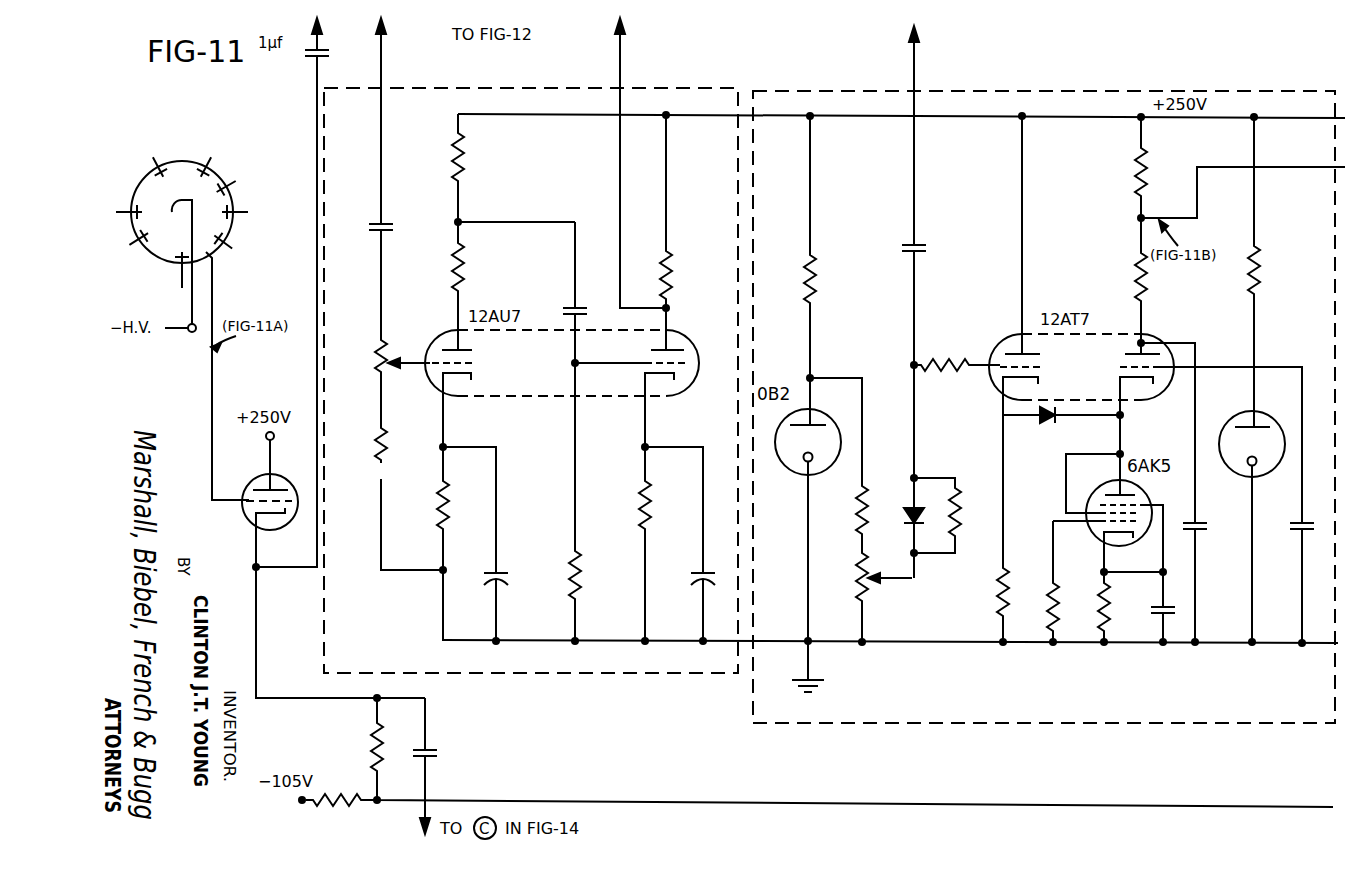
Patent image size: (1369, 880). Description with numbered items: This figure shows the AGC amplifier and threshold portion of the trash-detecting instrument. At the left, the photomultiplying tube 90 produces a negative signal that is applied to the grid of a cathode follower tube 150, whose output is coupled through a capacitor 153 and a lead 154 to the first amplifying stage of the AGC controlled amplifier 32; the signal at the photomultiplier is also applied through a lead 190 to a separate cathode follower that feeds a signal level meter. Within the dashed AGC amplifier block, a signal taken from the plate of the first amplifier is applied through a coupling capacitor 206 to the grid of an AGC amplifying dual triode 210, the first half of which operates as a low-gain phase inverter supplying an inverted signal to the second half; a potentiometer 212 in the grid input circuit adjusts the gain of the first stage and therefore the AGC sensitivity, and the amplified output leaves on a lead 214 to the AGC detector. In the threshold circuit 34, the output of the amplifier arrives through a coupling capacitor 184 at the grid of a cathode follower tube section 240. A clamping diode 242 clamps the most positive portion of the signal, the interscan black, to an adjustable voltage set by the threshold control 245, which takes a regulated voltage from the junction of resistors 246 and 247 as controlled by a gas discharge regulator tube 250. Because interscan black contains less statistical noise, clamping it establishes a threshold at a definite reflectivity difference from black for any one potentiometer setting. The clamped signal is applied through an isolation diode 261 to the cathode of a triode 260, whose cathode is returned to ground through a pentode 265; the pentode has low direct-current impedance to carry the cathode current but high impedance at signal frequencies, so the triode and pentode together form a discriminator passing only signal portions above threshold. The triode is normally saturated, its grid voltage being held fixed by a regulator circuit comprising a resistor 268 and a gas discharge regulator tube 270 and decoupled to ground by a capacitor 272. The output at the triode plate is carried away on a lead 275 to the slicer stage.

The photomultiplying tube 90 is at (180, 160).
The cathode follower tube 150 is at (260, 485).
The capacitor 153 is at (322, 53).
The lead 154 is at (317, 112).
The lead 190 is at (430, 752).
The AGC controlled amplifier 32 is at (531, 369).
The threshold circuit 34 is at (1044, 396).
The coupling capacitor 206 is at (388, 234).
The AGC amplifying dual triode 210 is at (472, 398).
The potentiometer 212 is at (376, 360).
The lead 214 is at (622, 48).
The coupling capacitor 184 is at (928, 251).
The cathode follower tube section 240 is at (994, 348).
The clamping diode 242 is at (922, 552).
The threshold control 245 is at (854, 576).
The resistor 246 is at (818, 282).
The resistor 247 is at (856, 502).
The gas discharge regulator tube 250 is at (796, 466).
The triode 260 is at (1150, 400).
The isolation diode 261 is at (1050, 424).
The pentode 265 is at (1076, 506).
The resistor 268 is at (1262, 266).
The gas discharge regulator tube 270 is at (1266, 466).
The capacitor 272 is at (1294, 528).
The lead 275 is at (1282, 168).